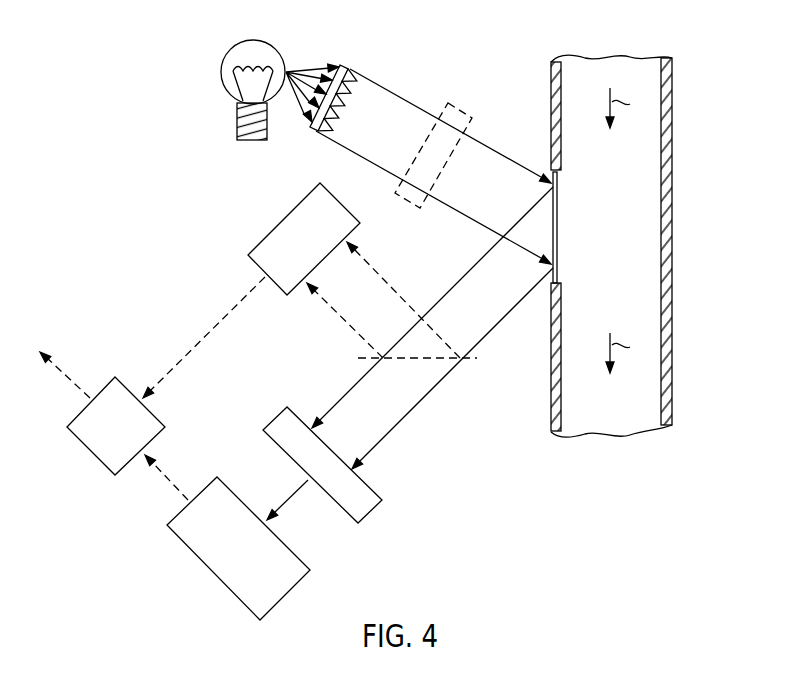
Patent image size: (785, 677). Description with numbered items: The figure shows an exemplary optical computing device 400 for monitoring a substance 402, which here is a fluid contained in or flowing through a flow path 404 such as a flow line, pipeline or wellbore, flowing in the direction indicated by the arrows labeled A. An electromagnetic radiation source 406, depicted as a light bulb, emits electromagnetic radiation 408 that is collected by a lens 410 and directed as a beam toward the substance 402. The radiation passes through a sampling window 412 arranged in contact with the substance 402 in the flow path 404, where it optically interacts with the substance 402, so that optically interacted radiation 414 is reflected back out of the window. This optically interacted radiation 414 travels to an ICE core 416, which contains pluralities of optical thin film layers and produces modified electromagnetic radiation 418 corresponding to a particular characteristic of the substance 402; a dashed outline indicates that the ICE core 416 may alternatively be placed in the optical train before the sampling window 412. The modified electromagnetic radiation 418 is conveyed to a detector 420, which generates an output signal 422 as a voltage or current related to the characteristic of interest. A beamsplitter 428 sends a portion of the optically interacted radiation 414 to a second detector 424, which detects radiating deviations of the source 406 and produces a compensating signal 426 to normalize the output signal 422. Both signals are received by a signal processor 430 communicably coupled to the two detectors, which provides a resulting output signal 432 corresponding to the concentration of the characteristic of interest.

The optical computing device 400 is at (148, 204).
The substance 402 is at (632, 244).
The flow path 404 is at (670, 108).
The electromagnetic radiation source 406 is at (219, 69).
The electromagnetic radiation 408 is at (312, 62).
The lens 410 is at (348, 66).
The sampling window 412 is at (558, 180).
The optically interacted radiation 414 is at (385, 438).
The ICE core 416 is at (403, 208).
The modified electromagnetic radiation 418 is at (292, 500).
The detector 420 is at (285, 590).
The output signal 422 is at (167, 480).
The second detector 424 is at (300, 213).
The compensating signal 426 is at (210, 333).
The beamsplitter 428 is at (402, 360).
The signal processor 430 is at (82, 443).
The resulting output signal 432 is at (63, 377).